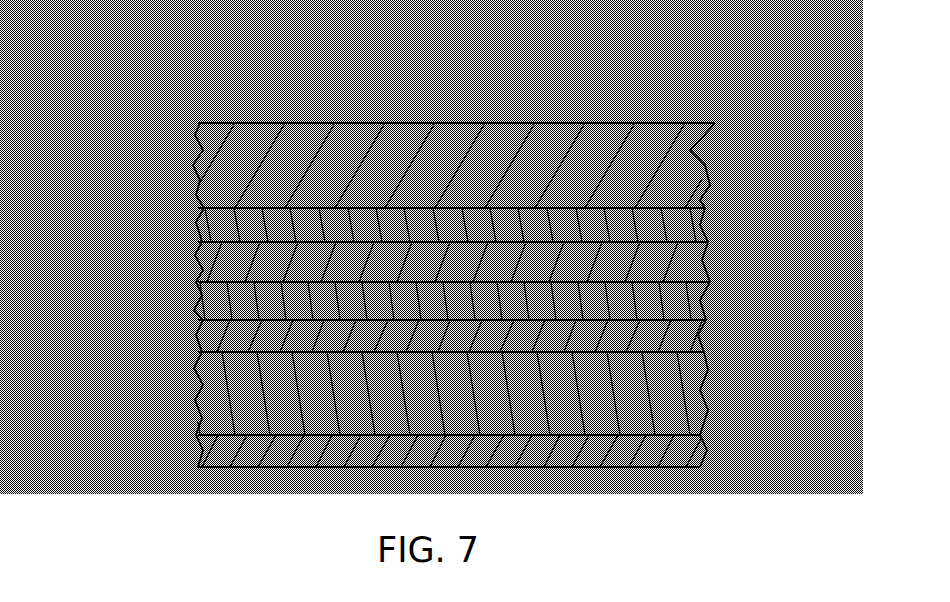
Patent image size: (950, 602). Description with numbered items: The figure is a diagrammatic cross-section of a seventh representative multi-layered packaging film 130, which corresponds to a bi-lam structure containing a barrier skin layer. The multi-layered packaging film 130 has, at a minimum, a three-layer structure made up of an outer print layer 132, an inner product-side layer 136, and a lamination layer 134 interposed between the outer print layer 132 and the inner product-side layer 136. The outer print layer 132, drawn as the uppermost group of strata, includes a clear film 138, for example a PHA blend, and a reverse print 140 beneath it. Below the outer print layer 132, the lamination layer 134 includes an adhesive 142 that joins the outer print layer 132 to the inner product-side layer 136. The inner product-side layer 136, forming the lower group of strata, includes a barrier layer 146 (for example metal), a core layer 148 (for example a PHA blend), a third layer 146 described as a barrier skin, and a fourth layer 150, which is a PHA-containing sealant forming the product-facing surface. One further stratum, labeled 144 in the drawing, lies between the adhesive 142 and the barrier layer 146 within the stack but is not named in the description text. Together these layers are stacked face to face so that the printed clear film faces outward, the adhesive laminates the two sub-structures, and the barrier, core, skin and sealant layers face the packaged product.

The multi-layered packaging film 130 is at (140, 60).
The outer print layer 132 is at (172, 120).
The lamination layer 134 is at (726, 250).
The inner product-side layer 136 is at (170, 430).
The clear film 138 is at (700, 149).
The reverse print 140 is at (694, 220).
The adhesive 142 is at (190, 258).
The second adhesive layer 144 is at (690, 312).
The barrier layer 146 is at (700, 350).
The core layer 148 is at (670, 410).
The fourth layer 150 is at (705, 460).